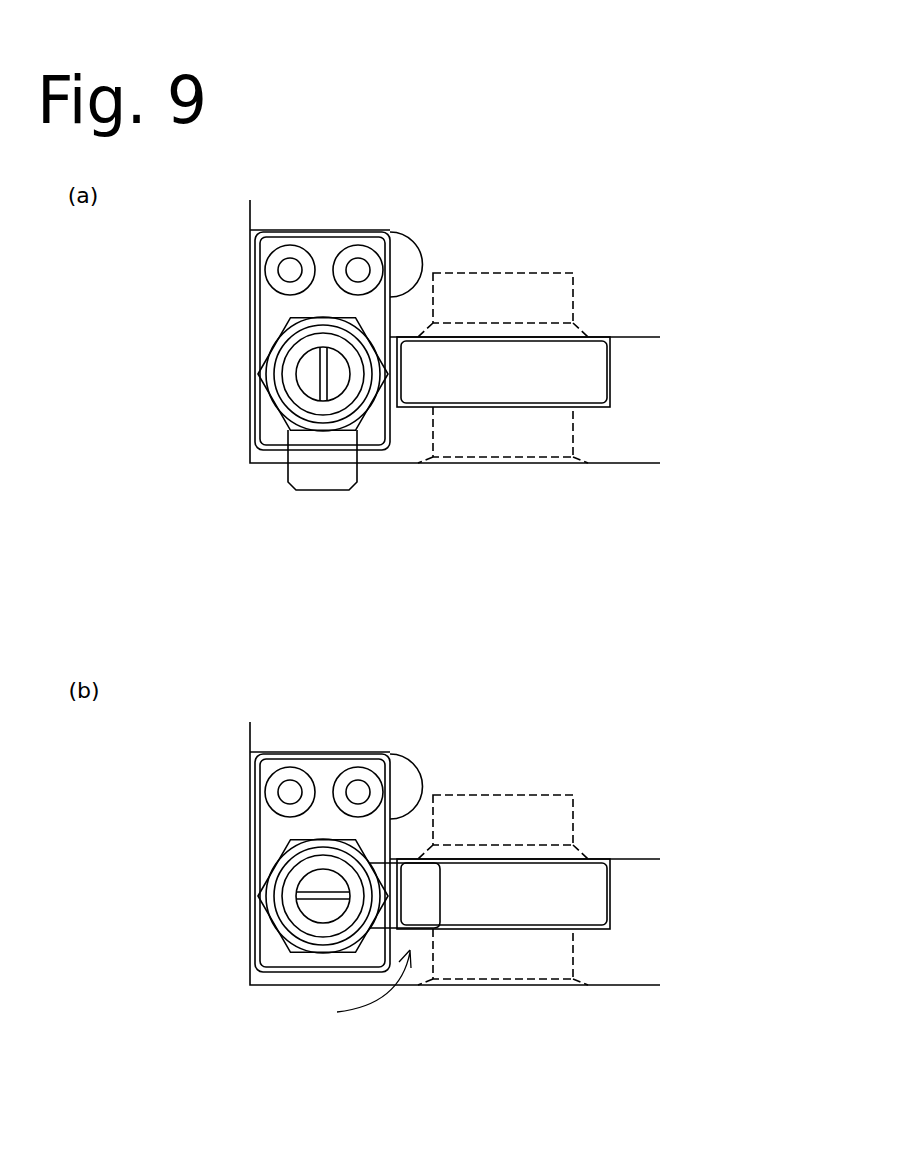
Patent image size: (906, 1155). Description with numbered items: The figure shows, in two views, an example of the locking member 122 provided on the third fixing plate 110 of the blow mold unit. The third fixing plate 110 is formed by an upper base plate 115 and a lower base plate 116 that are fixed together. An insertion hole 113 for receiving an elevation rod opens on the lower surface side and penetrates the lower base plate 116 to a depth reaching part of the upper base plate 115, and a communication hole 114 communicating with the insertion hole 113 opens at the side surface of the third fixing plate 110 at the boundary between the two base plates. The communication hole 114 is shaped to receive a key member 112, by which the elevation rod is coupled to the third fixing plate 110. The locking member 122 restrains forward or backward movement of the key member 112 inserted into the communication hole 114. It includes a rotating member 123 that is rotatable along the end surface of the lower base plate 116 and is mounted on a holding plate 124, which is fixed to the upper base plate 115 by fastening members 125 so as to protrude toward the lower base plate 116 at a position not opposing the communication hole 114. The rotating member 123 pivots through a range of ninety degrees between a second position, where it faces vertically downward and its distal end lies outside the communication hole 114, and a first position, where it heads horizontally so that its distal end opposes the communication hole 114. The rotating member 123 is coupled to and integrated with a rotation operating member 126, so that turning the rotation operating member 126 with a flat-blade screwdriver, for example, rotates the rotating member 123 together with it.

The third fixing plate 110 is at (593, 613).
The key member 112 is at (488, 747).
The insertion hole 113 is at (542, 282).
The communication hole 114 is at (470, 1040).
The upper base plate 115 is at (608, 297).
The lower base plate 116 is at (557, 633).
The locking member 122 is at (250, 496).
The rotating member 123 is at (322, 462).
The holding plate 124 is at (277, 327).
The fastening members 125 is at (288, 268).
The rotation operating member 126 is at (320, 372).